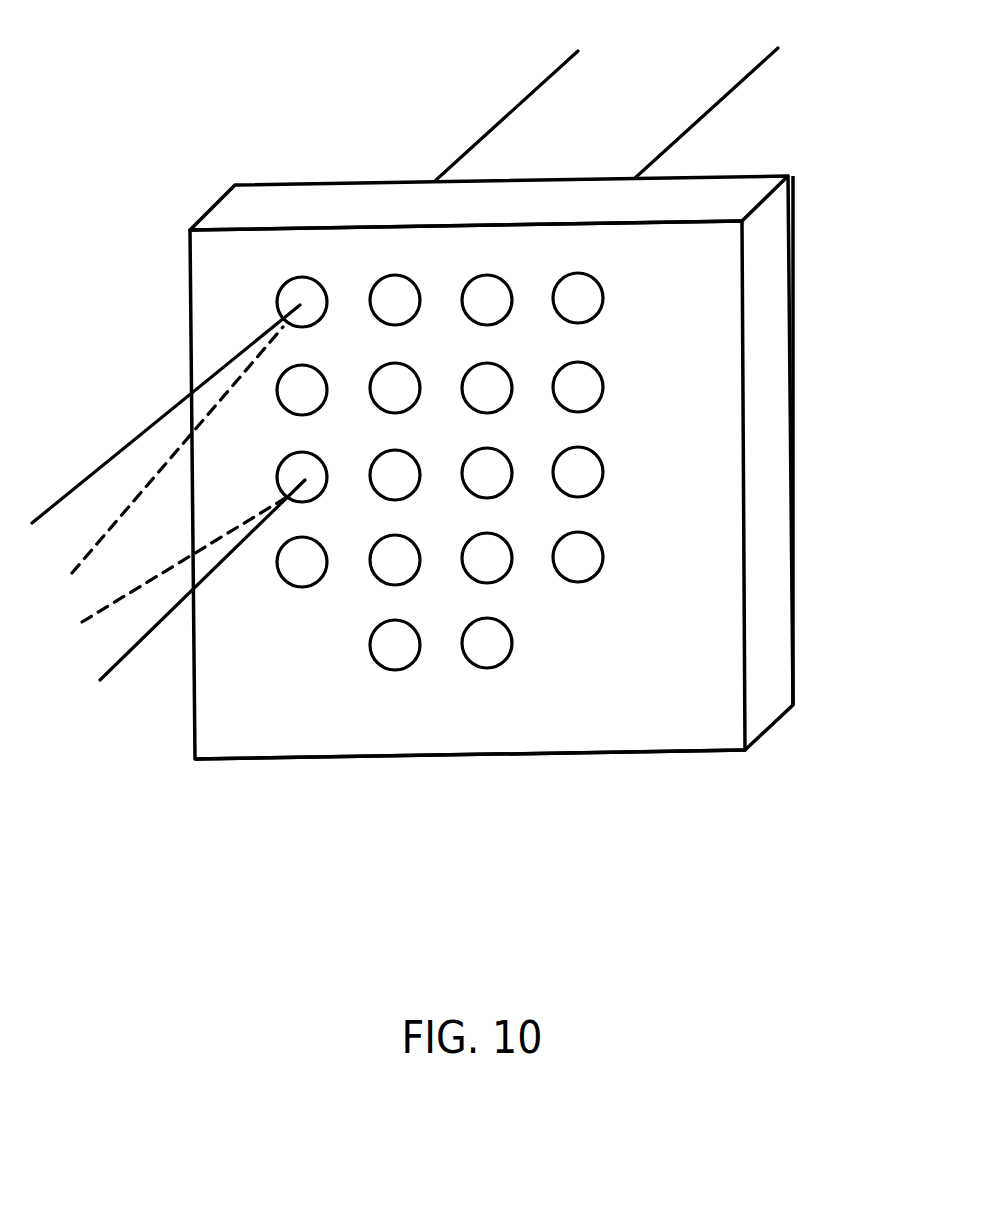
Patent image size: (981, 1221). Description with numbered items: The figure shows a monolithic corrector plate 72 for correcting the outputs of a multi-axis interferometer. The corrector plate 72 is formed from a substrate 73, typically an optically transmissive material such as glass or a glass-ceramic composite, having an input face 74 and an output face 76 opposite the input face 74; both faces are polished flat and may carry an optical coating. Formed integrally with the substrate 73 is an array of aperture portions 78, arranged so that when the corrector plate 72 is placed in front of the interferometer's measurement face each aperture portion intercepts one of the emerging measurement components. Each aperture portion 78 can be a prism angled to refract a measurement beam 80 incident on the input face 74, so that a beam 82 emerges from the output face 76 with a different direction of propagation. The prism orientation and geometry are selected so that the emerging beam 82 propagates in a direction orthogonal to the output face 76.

The corrector plate 72 is at (812, 146).
The substrate 73 is at (667, 674).
The input face 74 is at (473, 742).
The output face 76 is at (793, 638).
The aperture portions 78 is at (277, 305).
The measurement beam 80 is at (117, 455).
The beam 82 is at (542, 82).